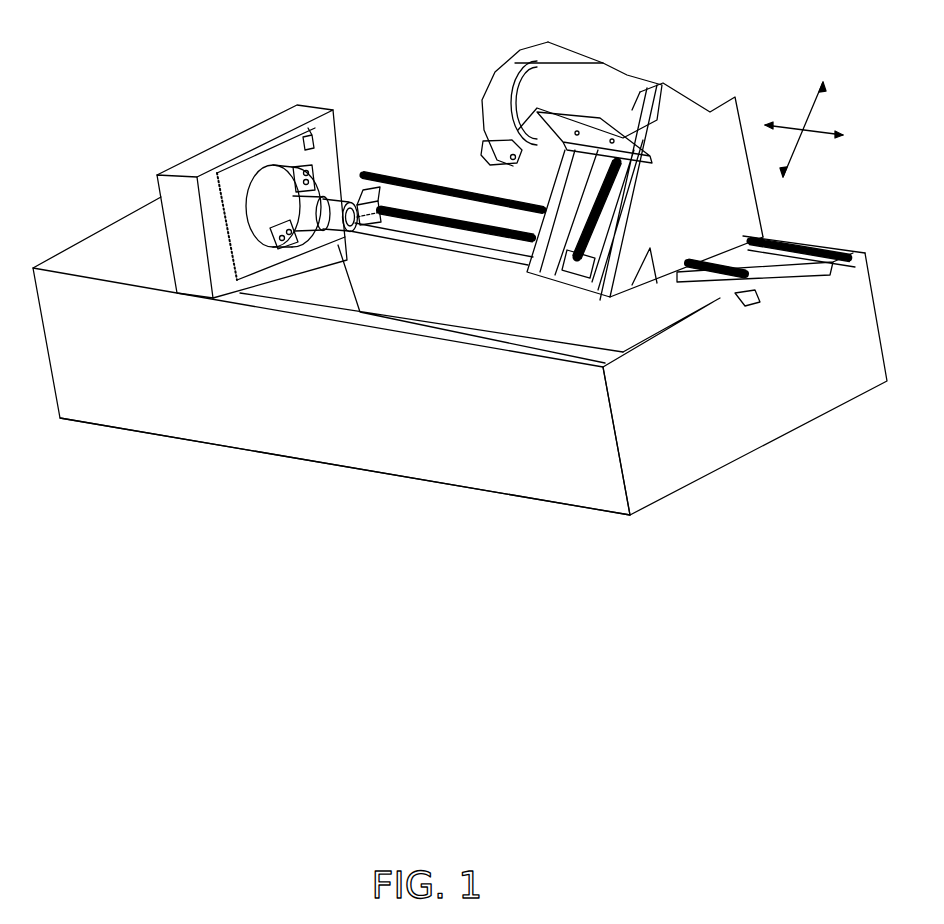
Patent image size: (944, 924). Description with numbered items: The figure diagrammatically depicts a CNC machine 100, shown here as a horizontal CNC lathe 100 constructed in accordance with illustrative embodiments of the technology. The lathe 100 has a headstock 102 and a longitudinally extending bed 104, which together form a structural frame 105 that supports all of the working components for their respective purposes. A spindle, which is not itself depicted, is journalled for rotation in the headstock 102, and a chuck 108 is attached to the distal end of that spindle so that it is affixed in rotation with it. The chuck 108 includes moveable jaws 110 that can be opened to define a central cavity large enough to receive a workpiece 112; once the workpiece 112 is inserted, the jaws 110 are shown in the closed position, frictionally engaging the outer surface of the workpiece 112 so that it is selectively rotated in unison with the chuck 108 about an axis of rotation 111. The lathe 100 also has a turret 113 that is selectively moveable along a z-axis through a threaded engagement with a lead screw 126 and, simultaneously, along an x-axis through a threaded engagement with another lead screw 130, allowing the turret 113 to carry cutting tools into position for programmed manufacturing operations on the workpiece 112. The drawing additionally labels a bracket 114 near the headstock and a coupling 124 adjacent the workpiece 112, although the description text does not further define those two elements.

The CNC machine 100 is at (383, 150).
The headstock 102 is at (237, 145).
The bed 104 is at (297, 390).
The structural frame 105 is at (443, 483).
The chuck 108 is at (267, 193).
The jaws 110 is at (283, 240).
The axis of rotation 111 is at (387, 222).
The workpiece 112 is at (330, 232).
The turret 113 is at (493, 84).
The bracket 114 is at (480, 152).
The coupling 124 is at (380, 208).
The lead screw 126 is at (480, 233).
The lead screw 130 is at (597, 236).